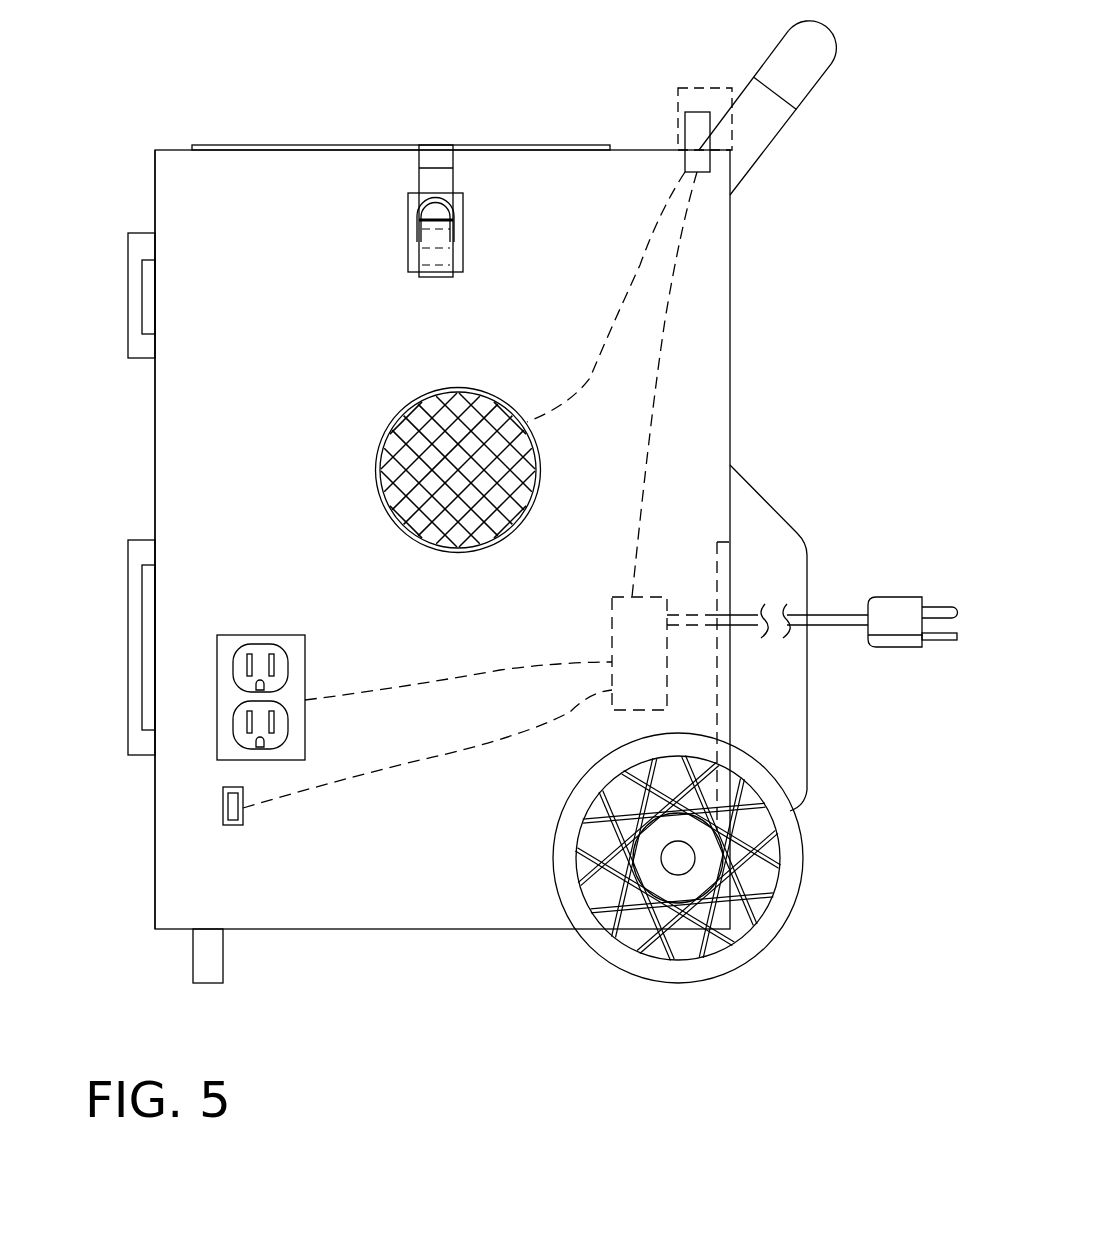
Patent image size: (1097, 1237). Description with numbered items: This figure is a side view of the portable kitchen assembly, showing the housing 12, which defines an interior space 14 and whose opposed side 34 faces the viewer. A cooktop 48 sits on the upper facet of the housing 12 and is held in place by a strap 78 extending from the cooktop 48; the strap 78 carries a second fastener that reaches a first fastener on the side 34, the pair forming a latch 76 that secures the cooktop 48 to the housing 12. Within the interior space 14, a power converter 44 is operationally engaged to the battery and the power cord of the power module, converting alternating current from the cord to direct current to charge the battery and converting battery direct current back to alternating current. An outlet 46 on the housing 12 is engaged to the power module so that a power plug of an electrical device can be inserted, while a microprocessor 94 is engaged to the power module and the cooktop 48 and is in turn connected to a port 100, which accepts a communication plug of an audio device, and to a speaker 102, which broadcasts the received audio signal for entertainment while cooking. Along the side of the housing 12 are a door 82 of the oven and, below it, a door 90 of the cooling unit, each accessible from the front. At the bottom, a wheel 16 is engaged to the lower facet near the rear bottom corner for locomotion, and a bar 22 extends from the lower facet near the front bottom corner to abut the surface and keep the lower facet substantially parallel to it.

The housing 12 is at (153, 168).
The interior space 14 is at (258, 262).
The cooktop 48 is at (300, 145).
The strap 78 is at (435, 178).
The microprocessor 94 is at (695, 125).
The latch 76 is at (444, 227).
The door 82 is at (132, 322).
The opposed side 34 is at (248, 377).
The speaker 102 is at (386, 452).
The power converter 44 is at (642, 628).
The door 90 is at (132, 597).
The outlet 46 is at (220, 663).
The port 100 is at (222, 797).
The bar 22 is at (212, 955).
The wheel 16 is at (613, 960).